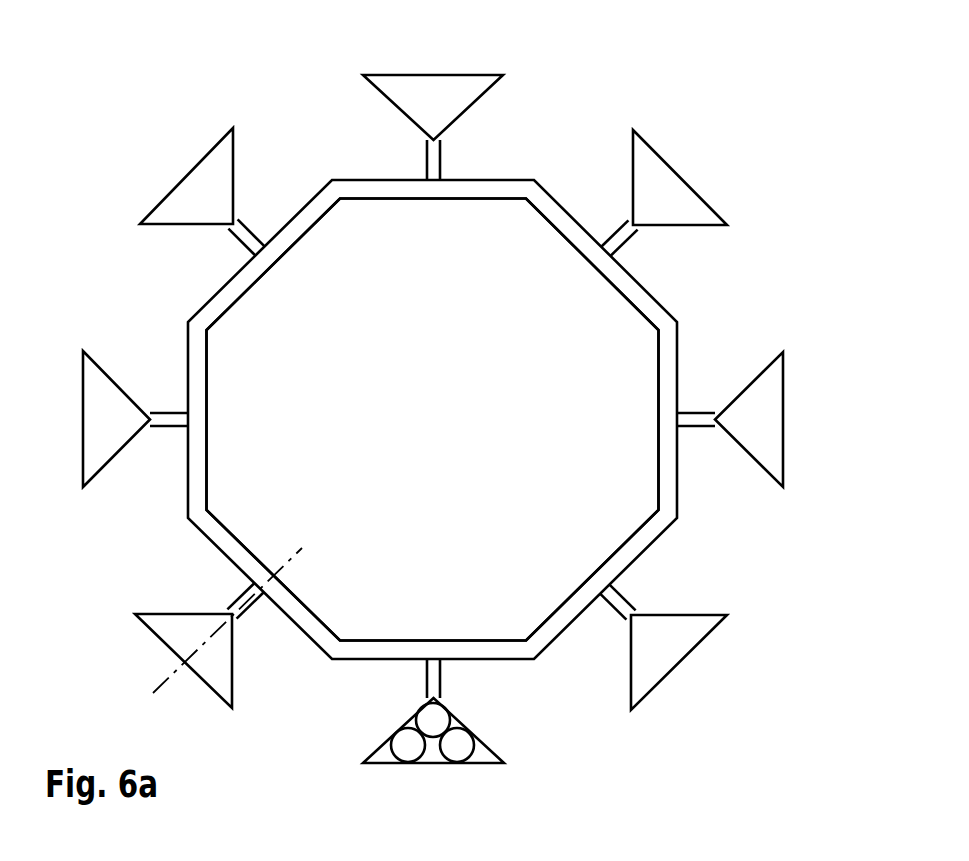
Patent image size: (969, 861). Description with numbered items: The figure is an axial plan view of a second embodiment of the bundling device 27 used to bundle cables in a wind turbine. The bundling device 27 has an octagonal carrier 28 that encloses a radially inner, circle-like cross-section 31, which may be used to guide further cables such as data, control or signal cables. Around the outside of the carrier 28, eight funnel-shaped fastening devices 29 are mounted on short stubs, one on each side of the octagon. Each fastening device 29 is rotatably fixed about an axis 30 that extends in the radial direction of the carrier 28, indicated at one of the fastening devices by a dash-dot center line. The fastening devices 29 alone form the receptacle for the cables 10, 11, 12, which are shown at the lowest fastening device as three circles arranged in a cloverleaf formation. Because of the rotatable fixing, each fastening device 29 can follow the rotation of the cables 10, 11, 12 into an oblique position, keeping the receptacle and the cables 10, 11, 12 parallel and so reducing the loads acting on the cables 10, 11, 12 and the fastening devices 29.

The bundling device 27 is at (729, 103).
The carrier 28 is at (481, 188).
The fastening devices 29 is at (197, 188).
The axis 30 is at (168, 676).
The circle-like cross-section 31 is at (422, 439).
The cable 10 is at (447, 780).
The cable 11 is at (408, 745).
The cable 12 is at (457, 745).